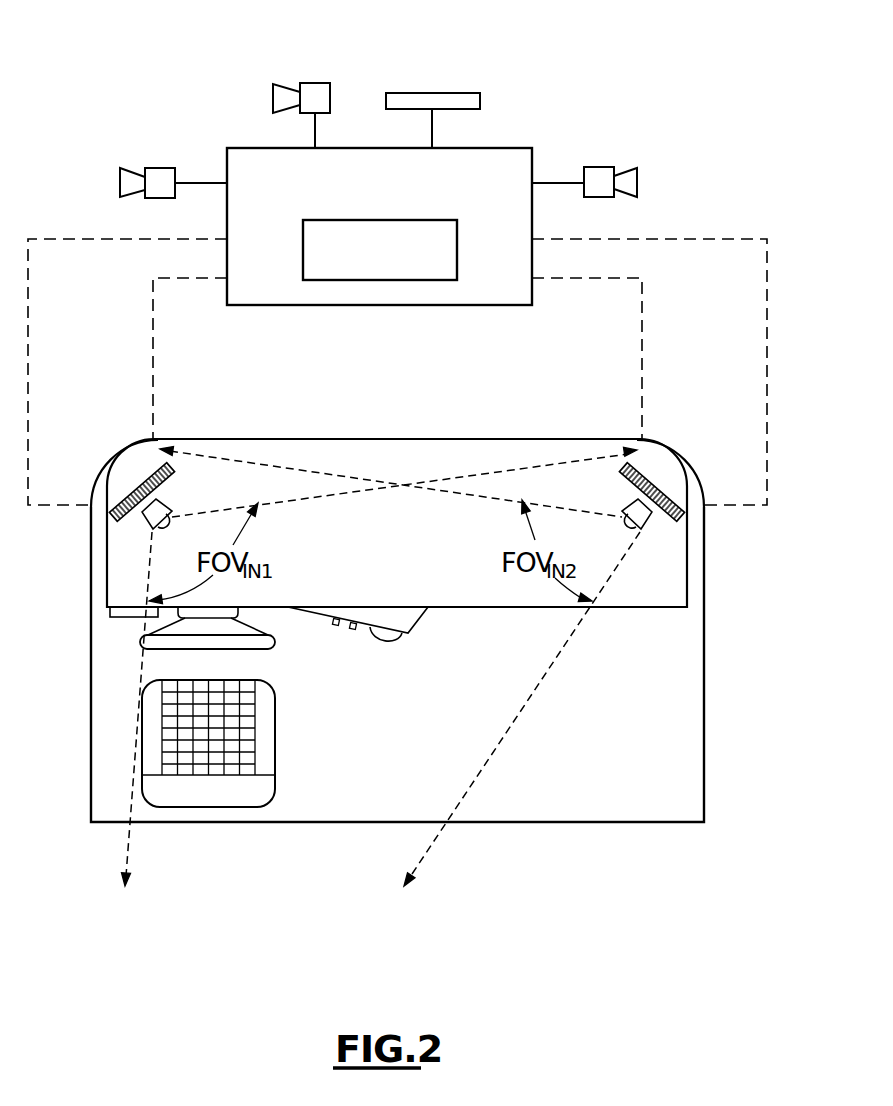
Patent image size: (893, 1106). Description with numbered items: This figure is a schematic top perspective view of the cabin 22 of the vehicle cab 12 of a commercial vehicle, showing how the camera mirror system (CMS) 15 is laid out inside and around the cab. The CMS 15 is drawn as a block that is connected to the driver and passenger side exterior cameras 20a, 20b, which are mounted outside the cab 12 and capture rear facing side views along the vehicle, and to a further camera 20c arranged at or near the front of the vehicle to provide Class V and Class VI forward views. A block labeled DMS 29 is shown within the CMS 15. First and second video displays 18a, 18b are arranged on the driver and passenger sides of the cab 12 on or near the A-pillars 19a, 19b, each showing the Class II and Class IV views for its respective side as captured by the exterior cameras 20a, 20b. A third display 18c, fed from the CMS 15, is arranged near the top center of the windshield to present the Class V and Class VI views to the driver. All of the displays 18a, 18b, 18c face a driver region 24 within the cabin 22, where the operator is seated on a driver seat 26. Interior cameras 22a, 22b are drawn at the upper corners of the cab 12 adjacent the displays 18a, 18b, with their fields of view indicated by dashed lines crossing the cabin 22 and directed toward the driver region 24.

The vehicle cab 12 is at (516, 410).
The camera mirror system 15 is at (532, 162).
The first video display 18a is at (134, 471).
The second video display 18b is at (660, 472).
The third display 18c is at (467, 93).
The A-pillar 19a is at (108, 478).
The A-pillar 19b is at (685, 478).
The exterior camera 20a is at (158, 168).
The exterior camera 20b is at (600, 167).
The camera 20c is at (313, 83).
The cabin 22 is at (621, 769).
The imager / camera 22a is at (176, 502).
The imager / camera 22b is at (618, 502).
The driver region 24 is at (338, 633).
The driver seat 26 is at (262, 730).
The data management system (DMS) 29 is at (345, 281).